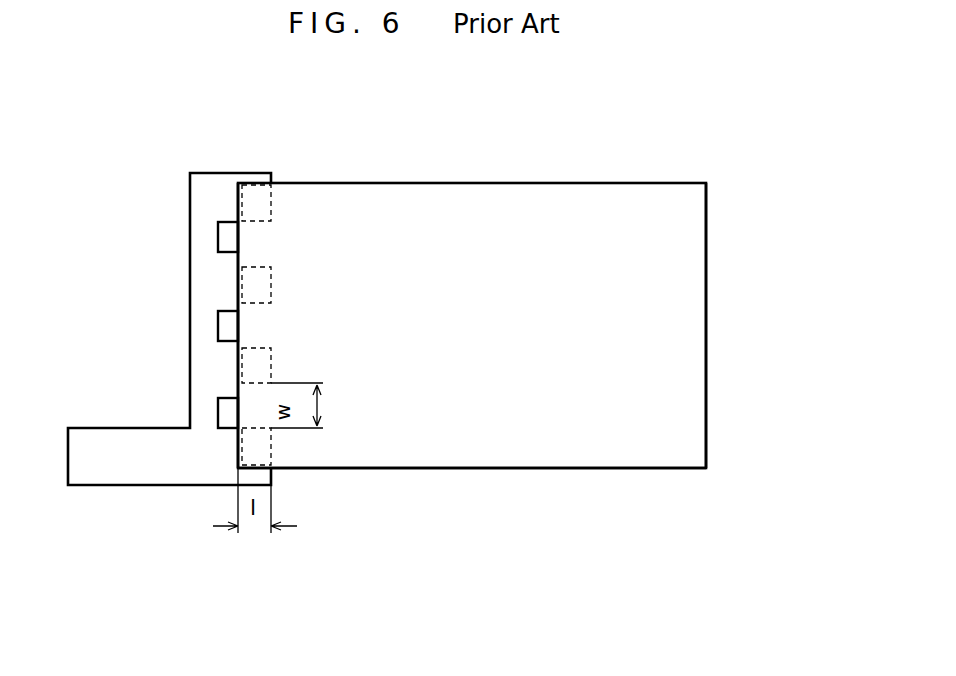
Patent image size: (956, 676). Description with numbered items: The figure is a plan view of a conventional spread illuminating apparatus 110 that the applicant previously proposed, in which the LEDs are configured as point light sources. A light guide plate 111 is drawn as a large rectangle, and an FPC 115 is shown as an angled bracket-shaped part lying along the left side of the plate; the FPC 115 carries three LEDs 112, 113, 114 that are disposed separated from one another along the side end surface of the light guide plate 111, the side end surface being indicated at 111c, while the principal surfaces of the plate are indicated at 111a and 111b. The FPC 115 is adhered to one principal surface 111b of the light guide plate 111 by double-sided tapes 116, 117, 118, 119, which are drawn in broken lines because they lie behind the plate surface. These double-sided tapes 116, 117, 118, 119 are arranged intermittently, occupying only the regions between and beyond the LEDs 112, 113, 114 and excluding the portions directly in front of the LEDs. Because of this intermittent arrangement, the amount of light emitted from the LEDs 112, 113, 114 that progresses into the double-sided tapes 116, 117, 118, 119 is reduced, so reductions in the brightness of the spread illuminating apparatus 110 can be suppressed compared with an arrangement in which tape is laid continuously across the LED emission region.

The spread illuminating apparatus 110 is at (468, 523).
The light guide plate 111 is at (706, 228).
The front surface of substrate 111a is at (672, 298).
The principal surface 111b is at (685, 351).
The side end surface of substrate 111c is at (238, 203).
The LED 112 is at (223, 413).
The LED 113 is at (223, 337).
The LED 114 is at (223, 238).
The FPC 115 is at (136, 477).
The double-sided tape 116 is at (262, 445).
The double-sided tape 117 is at (252, 365).
The double-sided tape 118 is at (251, 280).
The double-sided tape 119 is at (260, 203).